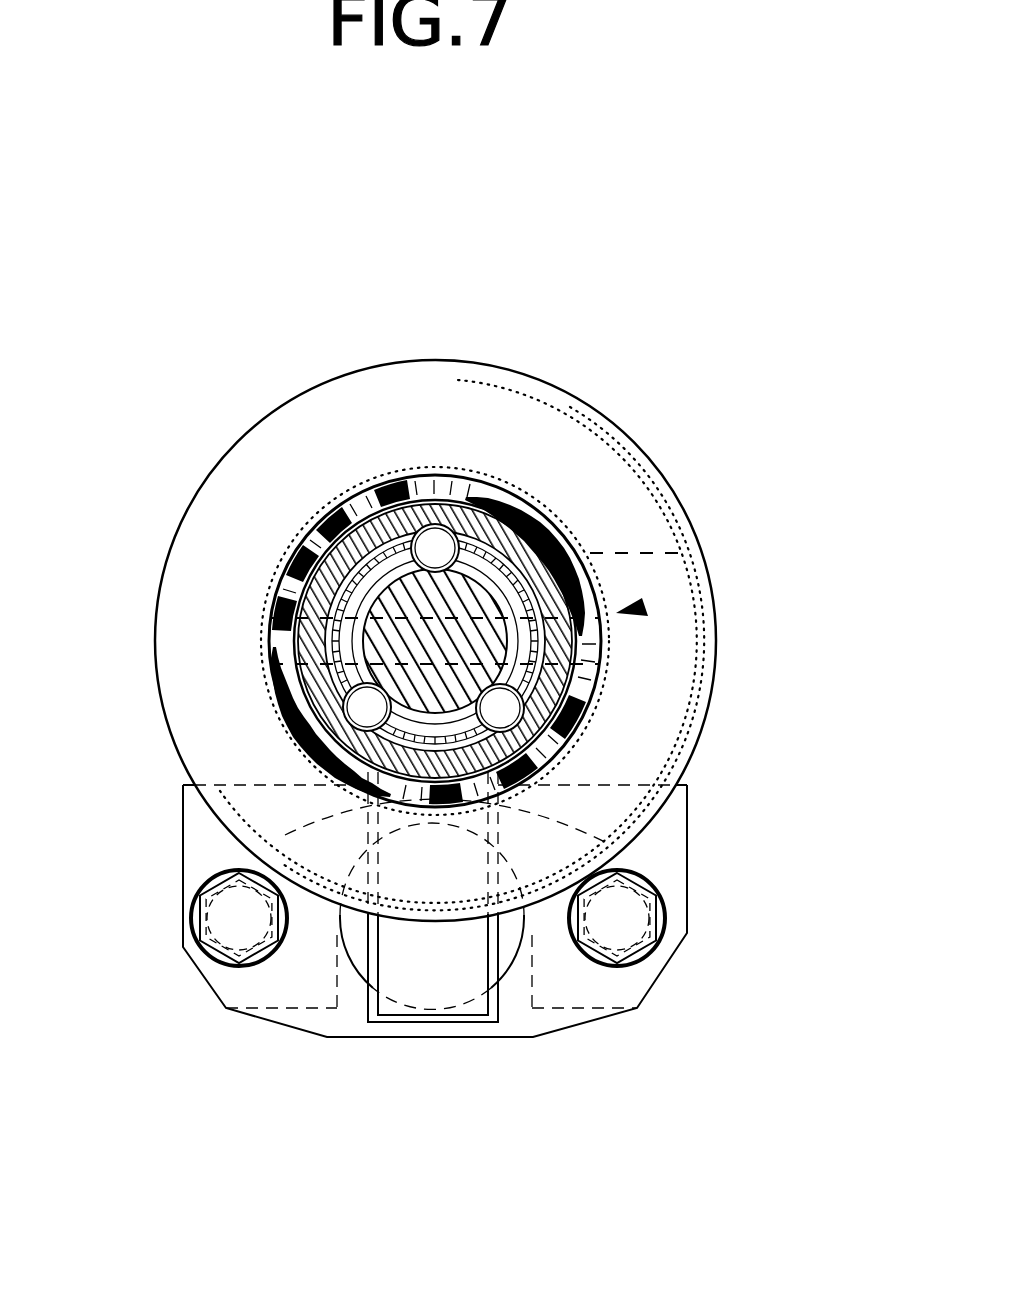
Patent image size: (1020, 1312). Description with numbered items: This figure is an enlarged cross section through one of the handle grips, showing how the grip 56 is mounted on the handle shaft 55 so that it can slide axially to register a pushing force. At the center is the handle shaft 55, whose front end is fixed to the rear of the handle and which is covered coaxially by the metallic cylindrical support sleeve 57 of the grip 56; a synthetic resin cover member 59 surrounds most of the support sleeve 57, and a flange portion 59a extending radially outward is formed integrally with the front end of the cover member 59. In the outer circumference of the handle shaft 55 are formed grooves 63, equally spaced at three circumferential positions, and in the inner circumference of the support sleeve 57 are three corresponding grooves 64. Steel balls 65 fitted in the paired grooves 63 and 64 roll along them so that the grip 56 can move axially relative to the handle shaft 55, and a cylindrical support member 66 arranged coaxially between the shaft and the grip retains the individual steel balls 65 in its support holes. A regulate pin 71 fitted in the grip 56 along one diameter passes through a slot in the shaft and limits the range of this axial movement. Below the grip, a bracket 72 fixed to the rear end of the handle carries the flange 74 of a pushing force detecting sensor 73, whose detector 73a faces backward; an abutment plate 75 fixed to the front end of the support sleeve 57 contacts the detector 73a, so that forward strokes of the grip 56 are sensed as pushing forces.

The handle shaft 55 is at (478, 612).
The grip 56 is at (645, 607).
The support sleeve 57 is at (535, 775).
The cover member 59 is at (470, 487).
The flange portion 59a is at (600, 453).
The grooves 63 is at (425, 478).
The grooves 64 is at (437, 572).
The steel balls 65 is at (348, 497).
The support member 66 is at (345, 640).
The regulate pin 71 is at (722, 540).
The bracket 72 is at (183, 824).
The pushing force detecting sensor 73 is at (350, 982).
The detector 73a is at (477, 1022).
The flange 74 is at (290, 976).
The abutment plate 75 is at (420, 998).